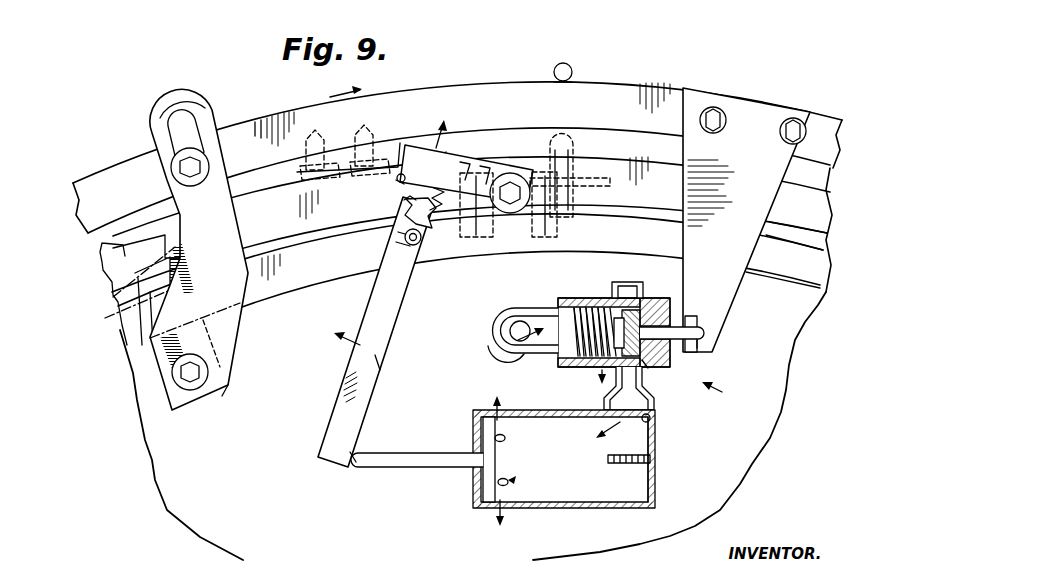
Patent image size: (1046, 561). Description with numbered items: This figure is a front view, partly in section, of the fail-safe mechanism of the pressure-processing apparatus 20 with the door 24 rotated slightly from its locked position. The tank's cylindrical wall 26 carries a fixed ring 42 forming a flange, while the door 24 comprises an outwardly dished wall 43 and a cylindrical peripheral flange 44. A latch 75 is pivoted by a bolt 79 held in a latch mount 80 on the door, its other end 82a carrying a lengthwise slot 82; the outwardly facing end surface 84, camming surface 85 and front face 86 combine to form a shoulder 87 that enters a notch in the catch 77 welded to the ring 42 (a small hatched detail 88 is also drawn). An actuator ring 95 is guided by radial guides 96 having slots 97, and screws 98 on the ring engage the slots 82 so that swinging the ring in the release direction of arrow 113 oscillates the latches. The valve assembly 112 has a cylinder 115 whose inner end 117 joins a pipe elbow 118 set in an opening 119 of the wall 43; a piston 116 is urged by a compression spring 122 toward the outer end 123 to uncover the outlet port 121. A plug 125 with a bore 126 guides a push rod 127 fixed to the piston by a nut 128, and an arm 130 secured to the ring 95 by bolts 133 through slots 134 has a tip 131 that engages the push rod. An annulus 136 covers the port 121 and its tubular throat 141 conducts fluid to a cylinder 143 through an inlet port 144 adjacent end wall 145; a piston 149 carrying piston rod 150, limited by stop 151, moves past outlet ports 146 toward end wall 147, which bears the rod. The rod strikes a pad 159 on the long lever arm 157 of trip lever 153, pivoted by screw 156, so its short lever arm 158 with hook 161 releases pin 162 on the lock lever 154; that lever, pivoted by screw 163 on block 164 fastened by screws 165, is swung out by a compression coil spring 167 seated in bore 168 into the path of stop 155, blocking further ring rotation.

The pressure-processing apparatus 20 is at (153, 64).
The door 24 is at (370, 545).
The cylindrical circumferential wall 26 is at (816, 240).
The fixed ring 42 is at (820, 210).
The outwardly dished wall 43 is at (792, 334).
The cylindrical peripheral flange 44 is at (810, 272).
The latch 75 is at (230, 324).
The catch 77 is at (112, 246).
The bolt 79 is at (192, 392).
The latch mount 80 is at (228, 392).
The slot 82 is at (192, 118).
The latch end 82a is at (186, 100).
The outwardly facing end surface 84 is at (178, 254).
The front face (camming surface) 85 is at (164, 300).
The front face 86 is at (126, 314).
The shoulder 87 is at (124, 290).
The pad 88 is at (192, 276).
The ring 95 is at (278, 114).
The guide 96 is at (203, 168).
The slot 97 is at (574, 80).
The screw 98 is at (574, 66).
The valve assembly 112 is at (722, 390).
The arrow 113 is at (341, 88).
The cylinder 115 is at (572, 296).
The piston 116 is at (636, 310).
The inner end of cylinder 117 is at (548, 308).
The pipe elbow 118 is at (506, 318).
The opening 119 is at (498, 366).
The outlet port 121 is at (644, 370).
The compression spring 122 is at (580, 368).
The outer end of cylinder 123 is at (646, 312).
The plug 125 is at (676, 354).
The bore 126 is at (684, 326).
The push rod 127 is at (700, 344).
The nut 128 is at (600, 308).
The arm 130 is at (736, 290).
The tip 131 is at (700, 330).
The bolt 133 is at (716, 108).
The slot 134 is at (736, 116).
The annulus 136 is at (628, 290).
The tubular throat 141 is at (612, 398).
The cylinder 143 is at (578, 514).
The fluid inlet port 144 is at (656, 424).
The end wall 145 is at (656, 476).
The fluid outlet ports 146 is at (500, 414).
The end wall 147 is at (482, 433).
The piston 149 is at (512, 478).
The piston rod 150 is at (416, 452).
The stop 151 is at (660, 454).
The trip lever 153 is at (412, 312).
The lock lever 154 is at (476, 150).
The stop 155 is at (392, 146).
The screw 156 is at (422, 244).
The long lever arm 157 is at (378, 360).
The short lever arm 158 is at (430, 228).
The pad 159 is at (364, 444).
The hook 161 is at (405, 206).
The pin 162 is at (398, 182).
The screw 163 is at (512, 214).
The block 164 is at (540, 175).
The screws 165 is at (566, 230).
The compression coil spring 167 is at (406, 176).
The bore 168 is at (438, 142).